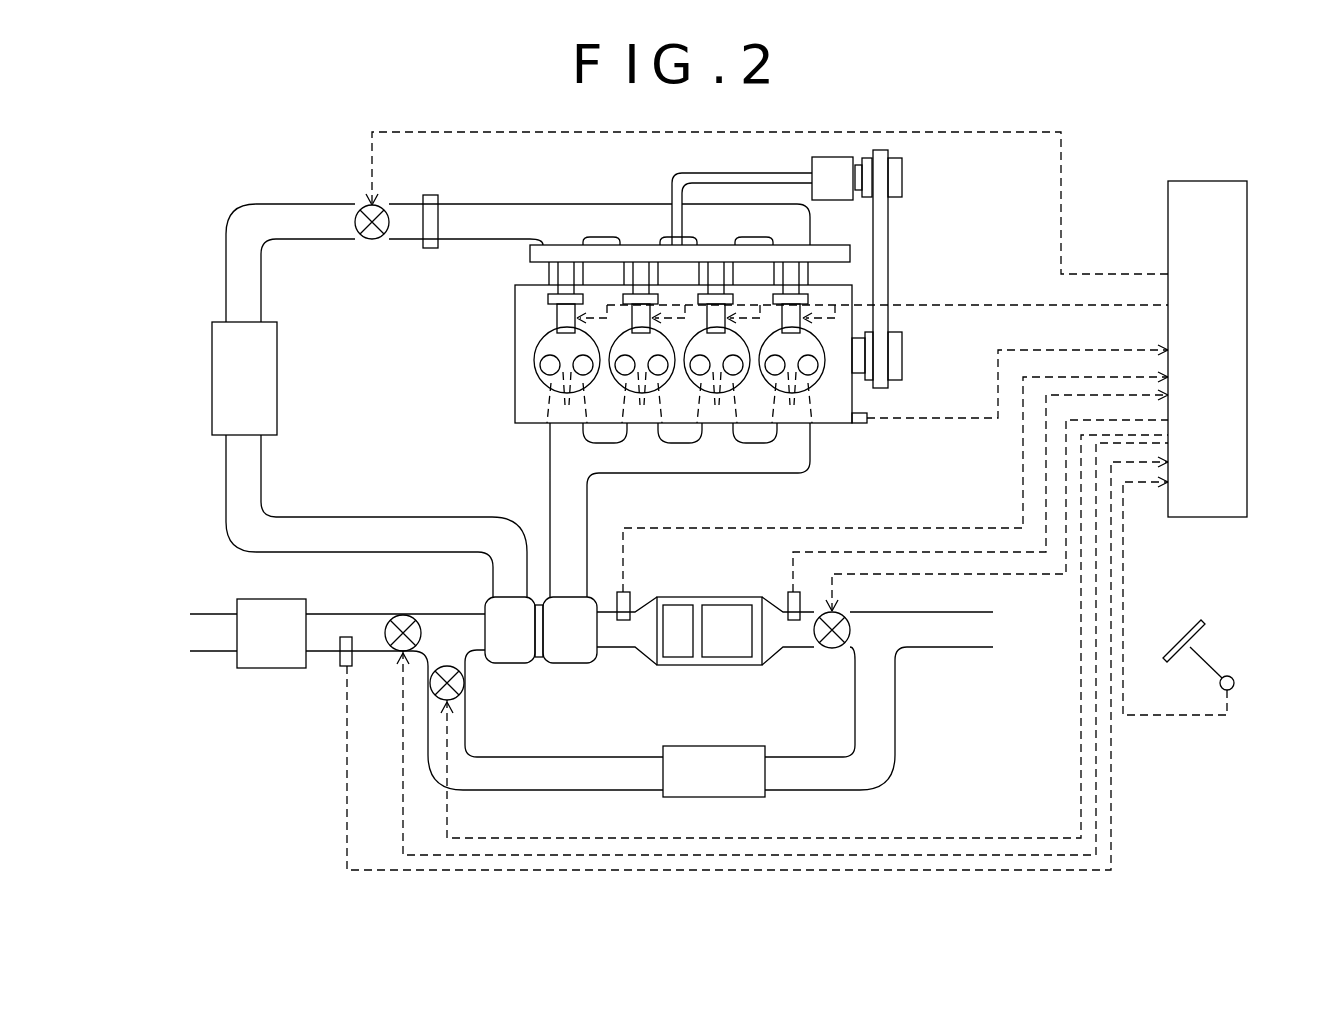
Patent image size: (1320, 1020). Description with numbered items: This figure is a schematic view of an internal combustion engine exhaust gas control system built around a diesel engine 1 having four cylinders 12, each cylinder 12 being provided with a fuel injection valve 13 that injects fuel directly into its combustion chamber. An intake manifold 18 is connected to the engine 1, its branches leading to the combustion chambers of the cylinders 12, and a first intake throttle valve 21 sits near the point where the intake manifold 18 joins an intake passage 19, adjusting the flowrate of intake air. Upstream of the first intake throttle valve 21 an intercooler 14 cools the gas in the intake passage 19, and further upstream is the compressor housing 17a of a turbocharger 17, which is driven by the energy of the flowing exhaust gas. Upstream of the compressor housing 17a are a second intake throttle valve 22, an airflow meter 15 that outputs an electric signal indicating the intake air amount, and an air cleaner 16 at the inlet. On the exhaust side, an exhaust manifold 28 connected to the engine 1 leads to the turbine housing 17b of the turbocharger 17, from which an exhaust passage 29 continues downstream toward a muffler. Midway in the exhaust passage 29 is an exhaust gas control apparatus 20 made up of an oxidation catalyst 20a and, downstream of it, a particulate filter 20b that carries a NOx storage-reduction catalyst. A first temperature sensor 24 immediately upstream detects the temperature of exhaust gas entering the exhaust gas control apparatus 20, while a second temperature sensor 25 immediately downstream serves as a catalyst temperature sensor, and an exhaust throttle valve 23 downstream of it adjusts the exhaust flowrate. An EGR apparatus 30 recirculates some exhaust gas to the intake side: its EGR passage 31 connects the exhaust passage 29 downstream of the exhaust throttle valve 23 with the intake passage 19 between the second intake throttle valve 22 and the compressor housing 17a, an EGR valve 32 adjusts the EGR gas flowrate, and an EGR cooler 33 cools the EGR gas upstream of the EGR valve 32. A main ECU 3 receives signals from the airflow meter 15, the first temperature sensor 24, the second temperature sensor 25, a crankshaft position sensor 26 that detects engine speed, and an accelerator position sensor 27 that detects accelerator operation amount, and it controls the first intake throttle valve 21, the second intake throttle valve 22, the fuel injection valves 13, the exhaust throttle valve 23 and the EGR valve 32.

The engine 1 is at (942, 228).
The main ECU 3 is at (1192, 517).
The cylinders 12 is at (825, 360).
The fuel injection valve 13 is at (548, 310).
The intercooler 14 is at (212, 375).
The airflow meter 15 is at (342, 667).
The air cleaner 16 is at (258, 670).
The turbocharger 17 is at (545, 676).
The compressor housing 17a is at (510, 667).
The turbine housing 17b is at (572, 657).
The intake manifold 18 is at (572, 203).
The intake passage 19 is at (220, 267).
The exhaust gas control apparatus 20 is at (721, 672).
The oxidation catalyst 20a is at (680, 665).
The particulate filter 20b is at (737, 657).
The first intake throttle valve 21 is at (393, 240).
The second intake throttle valve 22 is at (413, 613).
The exhaust throttle valve 23 is at (840, 665).
The first temperature sensor 24 is at (620, 622).
The second temperature sensor 25 is at (785, 597).
The crankshaft position sensor 26 is at (858, 425).
The accelerator position sensor 27 is at (1236, 677).
The exhaust manifold 28 is at (775, 477).
The exhaust passage 29 is at (550, 535).
The EGR apparatus 30 is at (799, 636).
The EGR passage 31 is at (895, 748).
The EGR valve 32 is at (467, 685).
The EGR cooler 33 is at (697, 798).